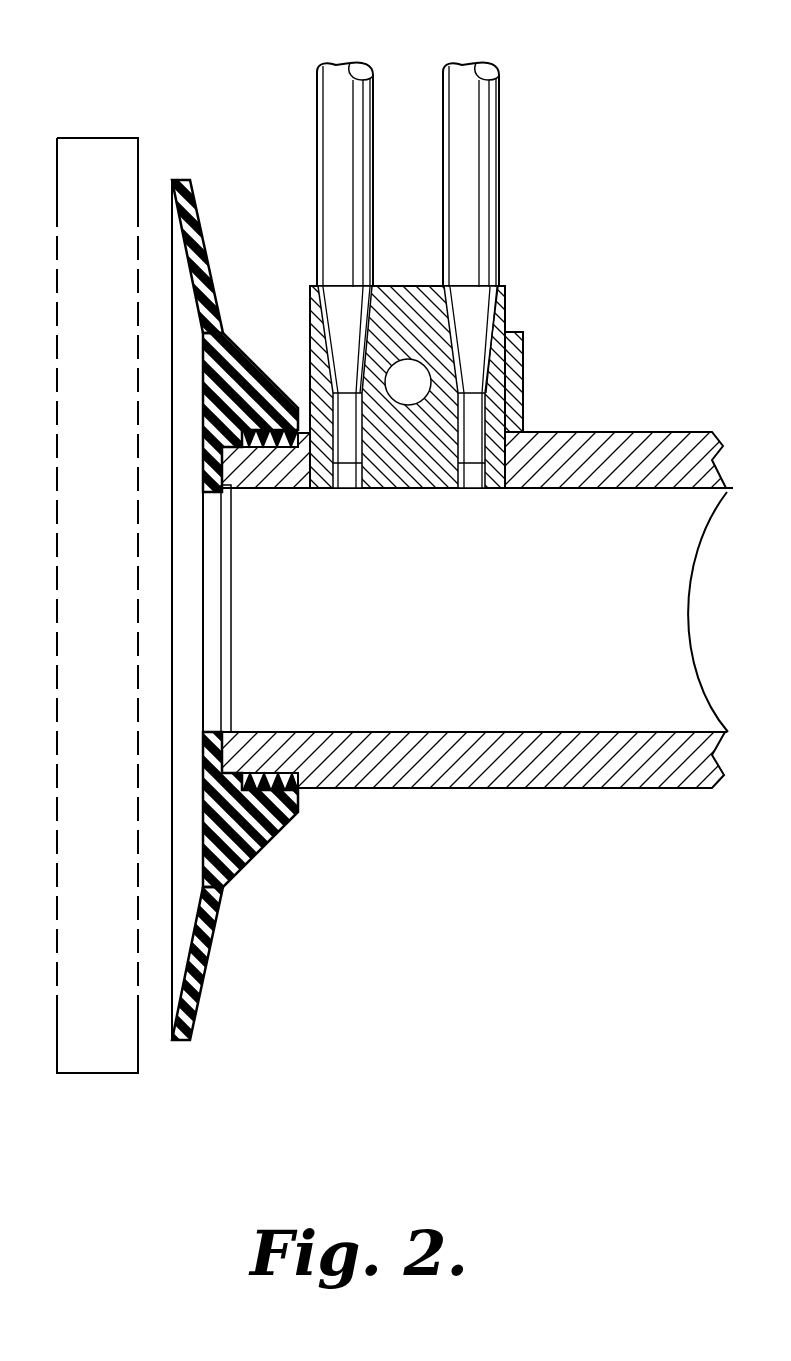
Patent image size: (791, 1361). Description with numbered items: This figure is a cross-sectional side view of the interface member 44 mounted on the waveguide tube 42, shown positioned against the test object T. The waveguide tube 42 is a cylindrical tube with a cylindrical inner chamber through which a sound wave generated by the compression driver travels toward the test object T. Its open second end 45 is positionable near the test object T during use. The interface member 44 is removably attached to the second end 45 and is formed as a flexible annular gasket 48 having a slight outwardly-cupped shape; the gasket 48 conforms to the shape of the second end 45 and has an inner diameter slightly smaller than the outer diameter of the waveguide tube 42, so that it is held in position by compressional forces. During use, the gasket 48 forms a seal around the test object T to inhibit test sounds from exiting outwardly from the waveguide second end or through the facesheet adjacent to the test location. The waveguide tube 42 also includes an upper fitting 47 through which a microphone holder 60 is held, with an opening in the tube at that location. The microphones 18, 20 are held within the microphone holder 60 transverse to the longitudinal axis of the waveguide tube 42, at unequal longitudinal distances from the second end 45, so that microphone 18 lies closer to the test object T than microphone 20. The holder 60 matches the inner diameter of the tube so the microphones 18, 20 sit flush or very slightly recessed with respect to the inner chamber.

The test object T is at (88, 149).
The microphone 18 is at (332, 80).
The microphone 20 is at (458, 80).
The microphone holder 60 is at (310, 330).
The upper fitting 47 is at (523, 380).
The waveguide tube 42 is at (674, 462).
The second end 45 is at (298, 790).
The flexible annular gasket 48 is at (232, 858).
The interface member 44 is at (208, 1006).